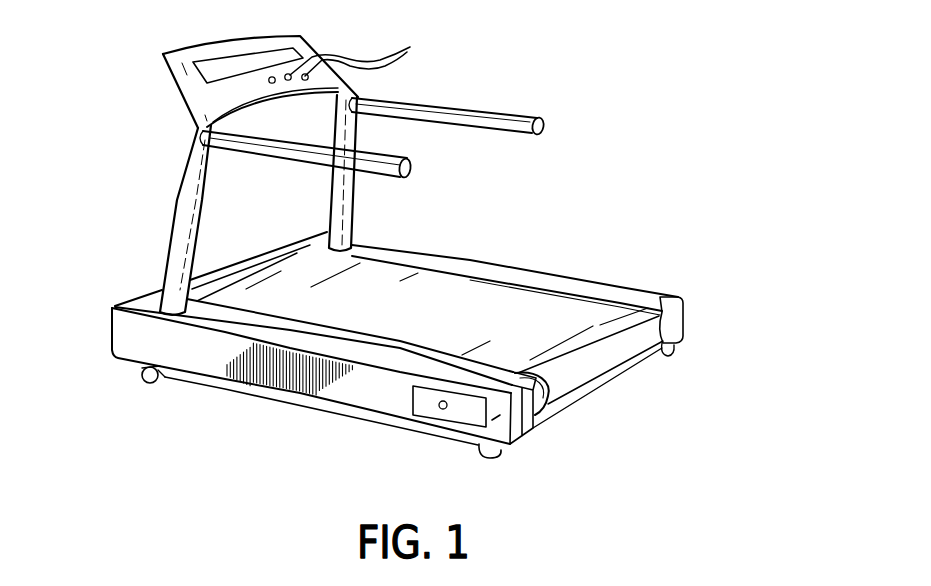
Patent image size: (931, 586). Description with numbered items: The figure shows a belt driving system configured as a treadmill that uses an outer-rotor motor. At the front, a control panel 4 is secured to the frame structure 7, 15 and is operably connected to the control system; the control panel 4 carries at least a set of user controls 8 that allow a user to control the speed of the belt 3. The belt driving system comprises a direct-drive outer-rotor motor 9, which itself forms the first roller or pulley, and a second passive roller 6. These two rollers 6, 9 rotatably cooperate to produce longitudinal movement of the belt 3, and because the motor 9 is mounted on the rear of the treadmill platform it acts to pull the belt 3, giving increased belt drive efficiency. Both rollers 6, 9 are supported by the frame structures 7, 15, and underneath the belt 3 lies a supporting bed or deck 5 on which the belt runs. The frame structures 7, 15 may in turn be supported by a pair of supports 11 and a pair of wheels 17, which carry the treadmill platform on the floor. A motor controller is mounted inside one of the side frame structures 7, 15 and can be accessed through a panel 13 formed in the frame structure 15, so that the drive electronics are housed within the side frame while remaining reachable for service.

The belt 3 is at (300, 277).
The control panel 4 is at (207, 92).
The supporting bed or deck 5 is at (453, 357).
The second passive roller 6 is at (232, 262).
The frame structure 7 is at (533, 277).
The set of user controls 8 is at (349, 57).
The direct-drive outer-rotor motor 9 is at (553, 403).
The supports 11 is at (480, 447).
The panel 13 is at (427, 408).
The frame structure 15 is at (203, 320).
The wheels 17 is at (137, 372).